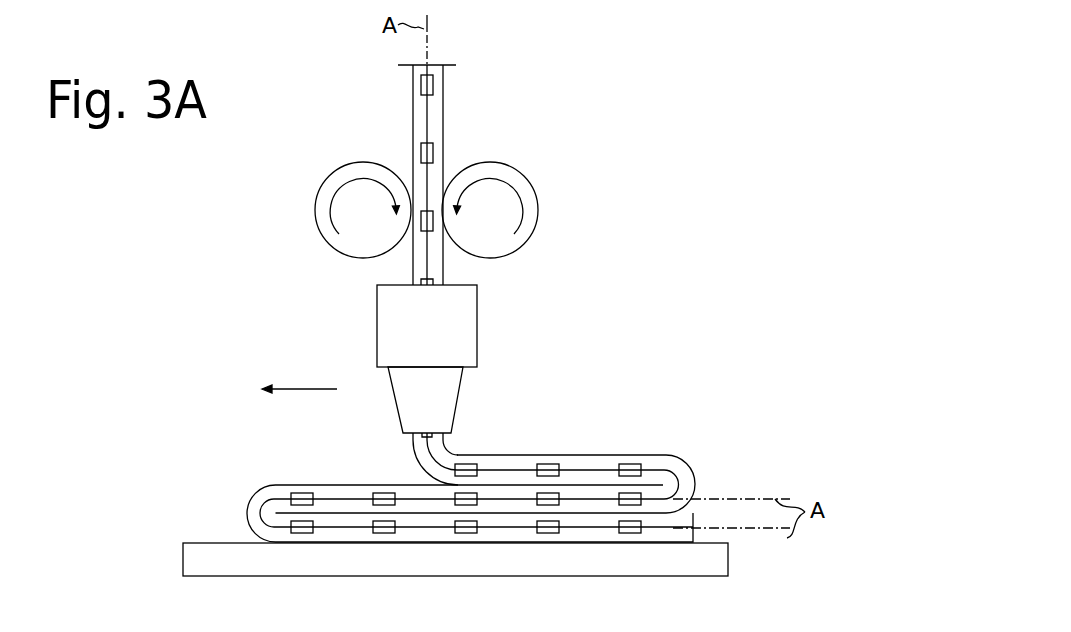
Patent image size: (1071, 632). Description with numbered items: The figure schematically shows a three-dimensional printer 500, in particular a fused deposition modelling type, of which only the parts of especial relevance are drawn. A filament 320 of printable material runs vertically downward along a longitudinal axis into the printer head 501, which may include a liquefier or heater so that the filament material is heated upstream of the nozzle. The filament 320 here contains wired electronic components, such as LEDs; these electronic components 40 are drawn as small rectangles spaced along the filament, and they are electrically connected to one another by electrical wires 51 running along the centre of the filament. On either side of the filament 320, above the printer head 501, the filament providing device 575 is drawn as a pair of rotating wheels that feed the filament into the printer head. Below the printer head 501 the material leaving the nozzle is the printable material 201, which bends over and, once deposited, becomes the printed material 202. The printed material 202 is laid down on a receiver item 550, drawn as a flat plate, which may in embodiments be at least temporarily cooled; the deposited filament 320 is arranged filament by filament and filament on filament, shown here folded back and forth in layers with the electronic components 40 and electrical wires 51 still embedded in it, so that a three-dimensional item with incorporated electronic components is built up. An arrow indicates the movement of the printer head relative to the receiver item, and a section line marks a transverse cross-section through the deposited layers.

The electronic component 40 is at (420, 88).
The electrical wire 51 is at (428, 257).
The printable material 201 is at (449, 442).
The printed material 202 is at (426, 460).
The filament 320 is at (418, 120).
The 3D printer 500 is at (552, 262).
The printer head 501 is at (410, 313).
The receiver item 550 is at (179, 564).
The filament providing device 575 is at (497, 151).